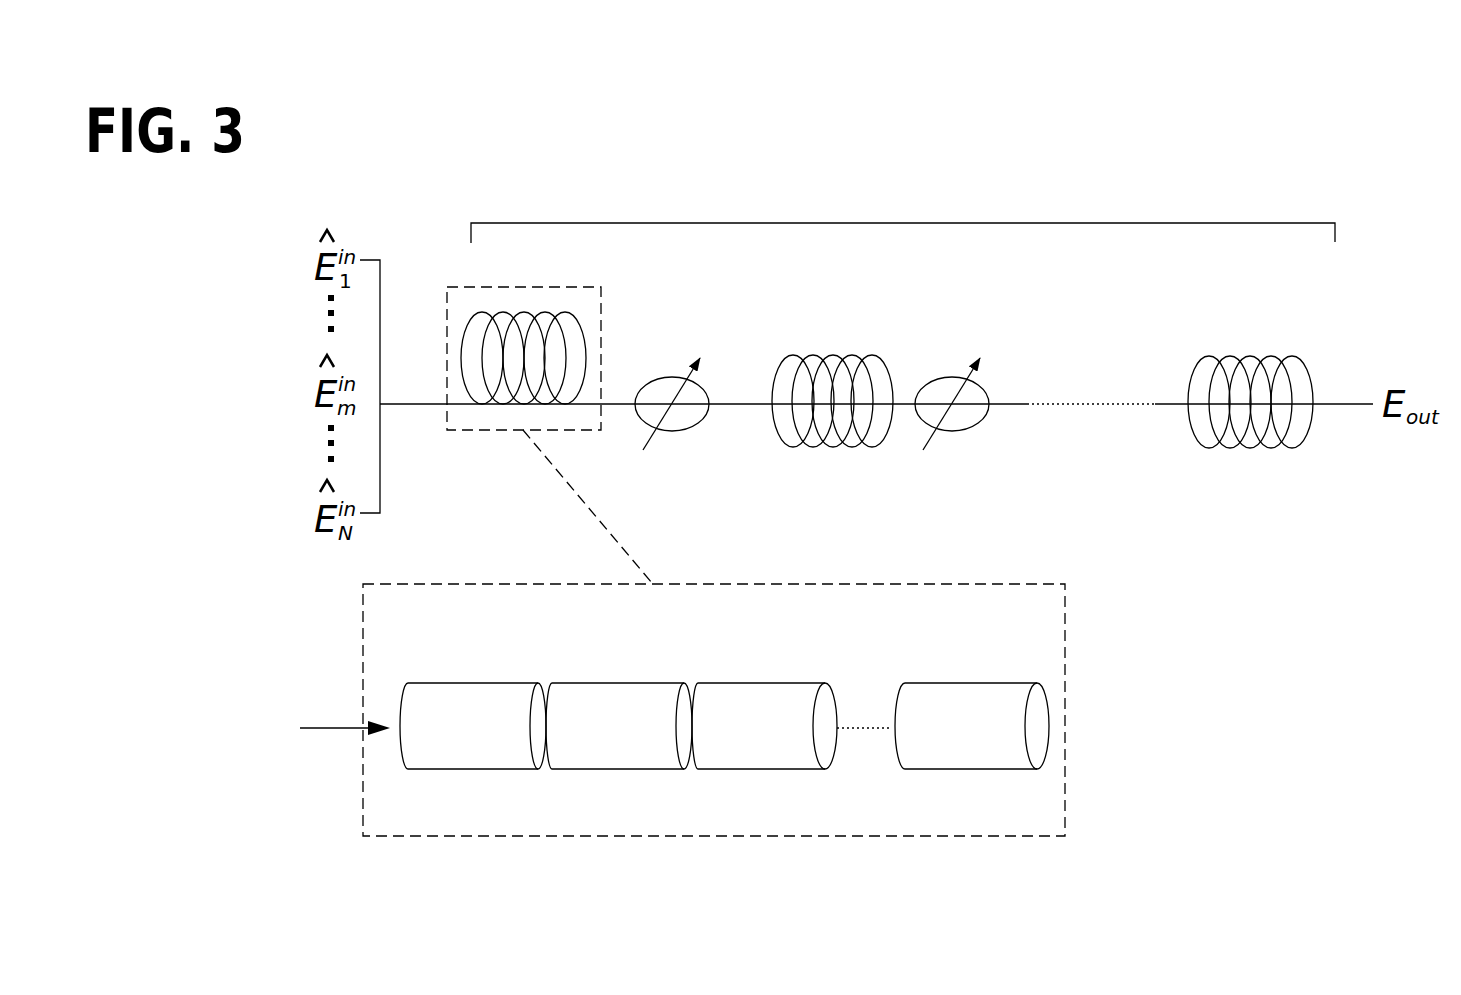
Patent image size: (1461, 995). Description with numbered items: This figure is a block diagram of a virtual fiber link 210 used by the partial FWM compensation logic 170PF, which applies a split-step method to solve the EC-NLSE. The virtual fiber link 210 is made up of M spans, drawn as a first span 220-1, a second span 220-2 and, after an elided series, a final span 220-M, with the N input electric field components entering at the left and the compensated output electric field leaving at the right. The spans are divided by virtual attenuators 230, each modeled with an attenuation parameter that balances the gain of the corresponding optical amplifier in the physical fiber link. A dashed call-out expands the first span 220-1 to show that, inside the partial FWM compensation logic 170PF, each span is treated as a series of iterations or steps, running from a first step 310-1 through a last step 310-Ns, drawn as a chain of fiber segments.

The virtual fiber link 210 is at (975, 223).
The first span 220-1 is at (507, 565).
The second span 220-2 is at (827, 477).
The M-th span 220-M is at (1258, 480).
The attenuator 230 is at (718, 328).
The partial FWM compensation logic 170PF is at (715, 733).
The first step 310-1 is at (472, 769).
The Ns-th step 310-Ns is at (985, 769).